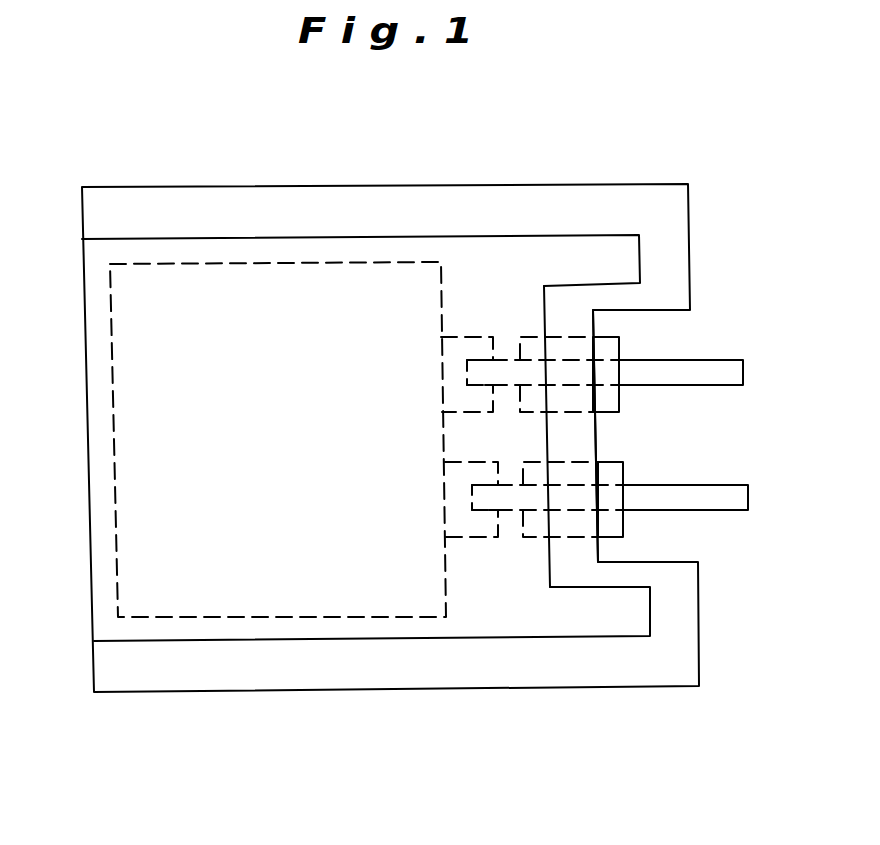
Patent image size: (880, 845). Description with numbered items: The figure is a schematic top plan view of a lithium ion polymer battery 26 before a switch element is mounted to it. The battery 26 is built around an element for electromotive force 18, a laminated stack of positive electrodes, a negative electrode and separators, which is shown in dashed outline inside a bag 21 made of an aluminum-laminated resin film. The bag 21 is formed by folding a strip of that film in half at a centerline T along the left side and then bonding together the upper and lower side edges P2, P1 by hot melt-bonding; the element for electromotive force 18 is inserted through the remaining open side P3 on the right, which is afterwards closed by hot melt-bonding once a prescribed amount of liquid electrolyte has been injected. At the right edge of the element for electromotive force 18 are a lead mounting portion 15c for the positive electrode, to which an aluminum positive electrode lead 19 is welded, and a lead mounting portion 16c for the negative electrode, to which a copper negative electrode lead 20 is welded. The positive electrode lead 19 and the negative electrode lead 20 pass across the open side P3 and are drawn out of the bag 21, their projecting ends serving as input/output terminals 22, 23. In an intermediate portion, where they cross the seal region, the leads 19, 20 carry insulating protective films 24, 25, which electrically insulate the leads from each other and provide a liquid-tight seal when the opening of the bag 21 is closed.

The bag 21 is at (127, 187).
The upper side edge P2 is at (211, 215).
The lower side edge P1 is at (260, 677).
The open side P3 is at (577, 445).
The element for electromotive force 18 is at (287, 262).
The lead mounting portion 15c is at (453, 337).
The lead mounting portion 16c is at (473, 540).
The positive electrode lead 19 is at (520, 360).
The negative electrode lead 20 is at (523, 512).
The input/output terminal 22 is at (712, 356).
The input/output terminal 23 is at (727, 512).
The insulating protective film 24 is at (620, 340).
The insulating protective film 25 is at (625, 532).
The battery 26 is at (542, 148).
The centerline T is at (88, 403).